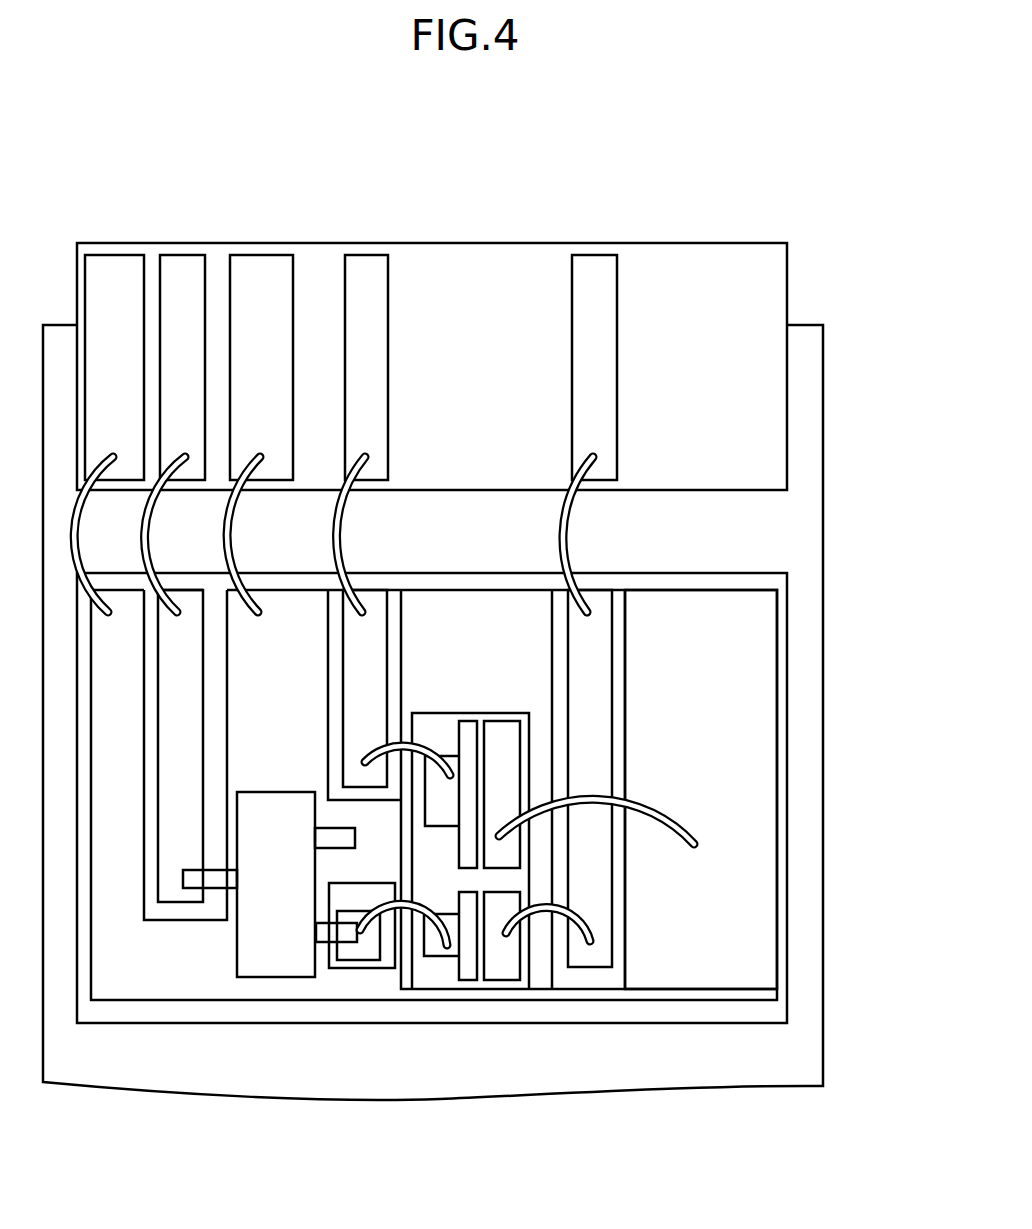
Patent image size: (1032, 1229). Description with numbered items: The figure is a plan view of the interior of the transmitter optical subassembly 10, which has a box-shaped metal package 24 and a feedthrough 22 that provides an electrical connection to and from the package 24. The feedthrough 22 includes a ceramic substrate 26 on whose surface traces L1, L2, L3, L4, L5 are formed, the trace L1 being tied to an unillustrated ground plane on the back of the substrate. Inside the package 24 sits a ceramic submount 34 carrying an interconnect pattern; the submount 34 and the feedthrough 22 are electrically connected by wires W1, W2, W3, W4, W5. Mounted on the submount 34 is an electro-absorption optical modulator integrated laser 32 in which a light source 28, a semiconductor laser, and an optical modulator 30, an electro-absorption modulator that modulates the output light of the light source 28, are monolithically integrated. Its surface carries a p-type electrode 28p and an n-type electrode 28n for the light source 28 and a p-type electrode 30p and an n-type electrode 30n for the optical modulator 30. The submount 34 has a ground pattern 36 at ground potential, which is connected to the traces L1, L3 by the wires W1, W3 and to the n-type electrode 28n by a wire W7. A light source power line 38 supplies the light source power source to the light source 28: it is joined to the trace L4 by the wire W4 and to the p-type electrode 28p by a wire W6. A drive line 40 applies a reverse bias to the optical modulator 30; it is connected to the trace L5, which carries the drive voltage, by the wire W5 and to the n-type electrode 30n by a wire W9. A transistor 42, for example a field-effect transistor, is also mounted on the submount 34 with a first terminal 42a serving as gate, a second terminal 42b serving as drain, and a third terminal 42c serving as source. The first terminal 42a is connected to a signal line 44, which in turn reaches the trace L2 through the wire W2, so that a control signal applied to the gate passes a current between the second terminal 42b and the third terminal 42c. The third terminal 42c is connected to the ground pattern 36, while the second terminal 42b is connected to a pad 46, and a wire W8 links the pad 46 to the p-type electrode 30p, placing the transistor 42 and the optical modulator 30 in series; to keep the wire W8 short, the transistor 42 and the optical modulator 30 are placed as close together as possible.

The transmitter optical subassembly 10 is at (456, 208).
The feedthrough 22 is at (790, 291).
The package 24 is at (824, 470).
The ceramic substrate 26 is at (745, 252).
The light source 28 is at (531, 847).
The p-type electrode 28p is at (468, 731).
The n-type electrode 28n is at (500, 731).
The optical modulator 30 is at (531, 895).
The p-type electrode 30p is at (466, 975).
The n-type electrode 30n is at (503, 975).
The electro-absorption optical modulator integrated laser 32 is at (672, 871).
The submount 34 is at (790, 726).
The ground pattern 36 is at (682, 690).
The light source power line 38 is at (348, 690).
The drive line 40 is at (573, 690).
The transistor 42 is at (263, 794).
The first terminal 42a is at (213, 879).
The second terminal 42b is at (327, 935).
The third terminal 42c is at (347, 838).
The signal line 44 is at (163, 690).
The pad 46 is at (364, 949).
The trace L1 is at (124, 365).
The trace L2 is at (194, 365).
The trace L3 is at (273, 365).
The trace L4 is at (378, 365).
The trace L5 is at (606, 365).
The wire W1 is at (76, 539).
The wire W2 is at (150, 539).
The wire W3 is at (230, 539).
The wire W4 is at (340, 539).
The wire W5 is at (567, 539).
The wire W6 is at (405, 740).
The wire W7 is at (655, 813).
The wire W8 is at (412, 913).
The wire W9 is at (586, 947).